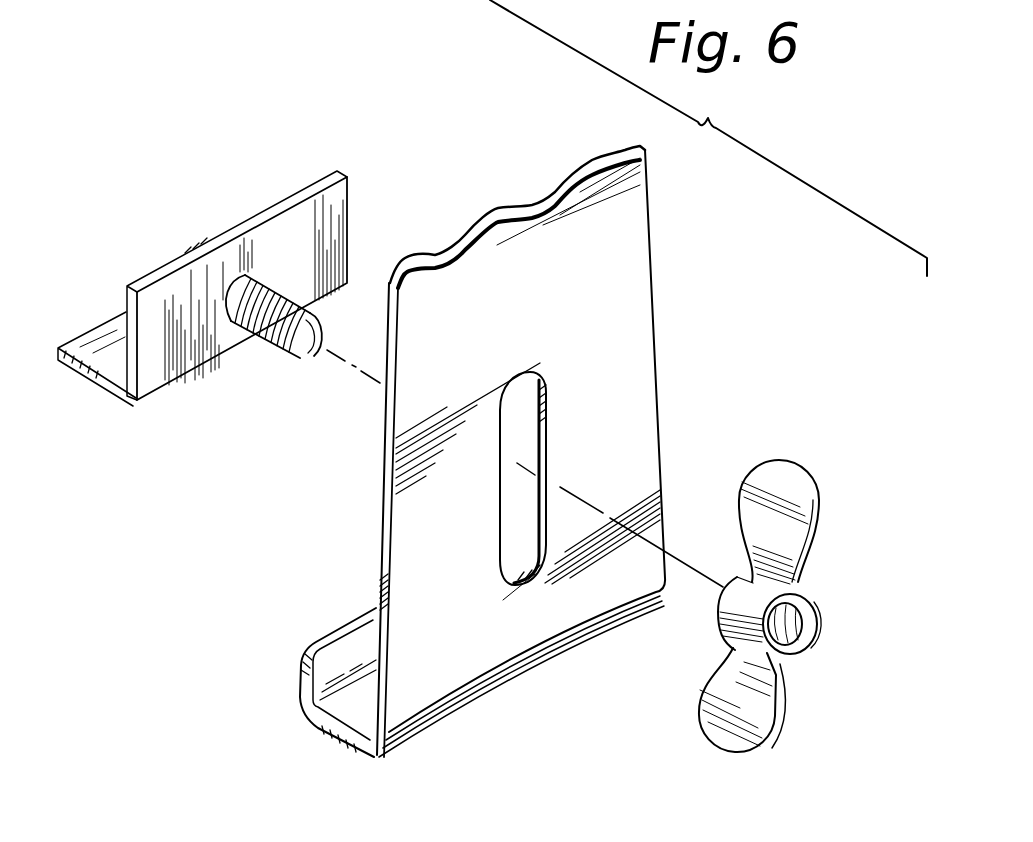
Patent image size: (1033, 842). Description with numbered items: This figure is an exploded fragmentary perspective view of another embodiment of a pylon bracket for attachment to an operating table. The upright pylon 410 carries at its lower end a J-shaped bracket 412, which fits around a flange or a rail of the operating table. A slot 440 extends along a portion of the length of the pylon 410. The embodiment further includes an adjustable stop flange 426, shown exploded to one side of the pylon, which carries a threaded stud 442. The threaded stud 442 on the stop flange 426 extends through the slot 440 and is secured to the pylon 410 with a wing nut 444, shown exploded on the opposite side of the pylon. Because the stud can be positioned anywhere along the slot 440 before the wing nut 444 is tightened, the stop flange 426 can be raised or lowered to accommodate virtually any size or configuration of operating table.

The pylon 410 is at (648, 233).
The J-shaped bracket 412 is at (325, 736).
The adjustable stop flange 426 is at (349, 186).
The slot 440 is at (522, 426).
The threaded stud 442 is at (278, 358).
The wing nut 444 is at (780, 718).